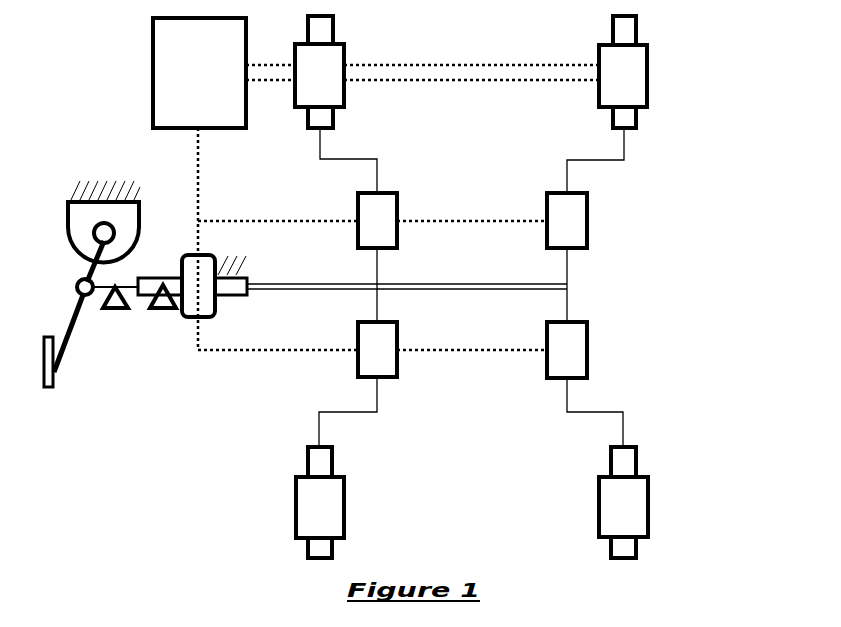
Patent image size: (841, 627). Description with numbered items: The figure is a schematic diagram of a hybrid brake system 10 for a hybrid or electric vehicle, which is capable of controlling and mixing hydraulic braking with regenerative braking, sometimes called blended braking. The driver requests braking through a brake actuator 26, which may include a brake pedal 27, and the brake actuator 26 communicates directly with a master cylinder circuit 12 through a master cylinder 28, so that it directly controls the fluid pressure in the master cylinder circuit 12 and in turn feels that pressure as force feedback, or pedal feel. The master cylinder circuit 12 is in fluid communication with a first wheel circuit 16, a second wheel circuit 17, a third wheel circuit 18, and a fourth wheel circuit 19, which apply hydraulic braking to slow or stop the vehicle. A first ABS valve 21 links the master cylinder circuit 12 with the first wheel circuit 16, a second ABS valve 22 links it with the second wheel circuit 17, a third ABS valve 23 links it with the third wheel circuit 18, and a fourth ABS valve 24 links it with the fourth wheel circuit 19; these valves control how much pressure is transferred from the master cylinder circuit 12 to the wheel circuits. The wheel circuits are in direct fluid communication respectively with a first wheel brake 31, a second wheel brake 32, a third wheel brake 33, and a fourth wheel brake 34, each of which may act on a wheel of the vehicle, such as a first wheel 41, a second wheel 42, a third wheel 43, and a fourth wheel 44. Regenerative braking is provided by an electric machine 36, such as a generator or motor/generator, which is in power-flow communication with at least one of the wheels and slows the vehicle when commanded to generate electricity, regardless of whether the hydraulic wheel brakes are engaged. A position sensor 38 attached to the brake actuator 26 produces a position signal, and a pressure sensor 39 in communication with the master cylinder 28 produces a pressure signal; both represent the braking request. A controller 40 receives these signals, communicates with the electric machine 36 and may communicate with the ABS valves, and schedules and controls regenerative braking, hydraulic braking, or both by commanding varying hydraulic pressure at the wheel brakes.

The hybrid brake system 10 is at (718, 278).
The master cylinder circuit 12 is at (303, 284).
The first wheel circuit 16 is at (380, 160).
The second wheel circuit 17 is at (622, 160).
The third wheel circuit 18 is at (318, 422).
The fourth wheel circuit 19 is at (624, 422).
The first anti-lock brake valve 21 is at (366, 210).
The second anti-lock brake valve 22 is at (574, 237).
The third anti-lock brake valve 23 is at (366, 360).
The fourth anti-lock brake valve 24 is at (578, 344).
The brake actuator 26 is at (77, 287).
The brake pedal 27 is at (42, 358).
The master cylinder 28 is at (176, 286).
The first wheel brake 31 is at (334, 88).
The second wheel brake 32 is at (637, 80).
The third wheel brake 33 is at (334, 495).
The fourth wheel brake 34 is at (640, 490).
The electric machine 36 is at (212, 85).
The position sensor 38 is at (115, 309).
The pressure sensor 39 is at (163, 309).
The controller 40 is at (205, 312).
The first wheel 41 is at (316, 117).
The second wheel 42 is at (620, 116).
The third wheel 43 is at (318, 547).
The fourth wheel 44 is at (612, 547).